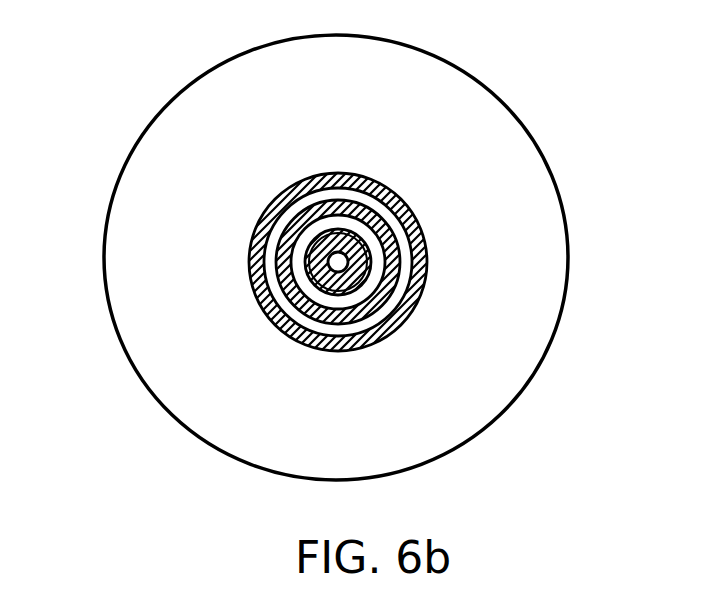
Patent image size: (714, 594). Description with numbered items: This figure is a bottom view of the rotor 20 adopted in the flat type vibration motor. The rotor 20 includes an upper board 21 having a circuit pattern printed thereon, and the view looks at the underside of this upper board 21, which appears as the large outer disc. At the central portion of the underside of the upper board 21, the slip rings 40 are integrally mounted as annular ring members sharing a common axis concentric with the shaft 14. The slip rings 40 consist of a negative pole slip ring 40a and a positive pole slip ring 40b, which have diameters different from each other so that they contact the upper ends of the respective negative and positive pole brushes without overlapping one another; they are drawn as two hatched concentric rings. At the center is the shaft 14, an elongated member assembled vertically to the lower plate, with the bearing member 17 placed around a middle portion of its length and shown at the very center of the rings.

The rotor 20 is at (110, 98).
The upper board 21 is at (488, 122).
The slip rings 40 is at (250, 320).
The negative pole slip ring 40a is at (378, 212).
The positive pole slip ring 40b is at (425, 252).
The shaft 14 is at (353, 263).
The bearing member 17 is at (340, 262).